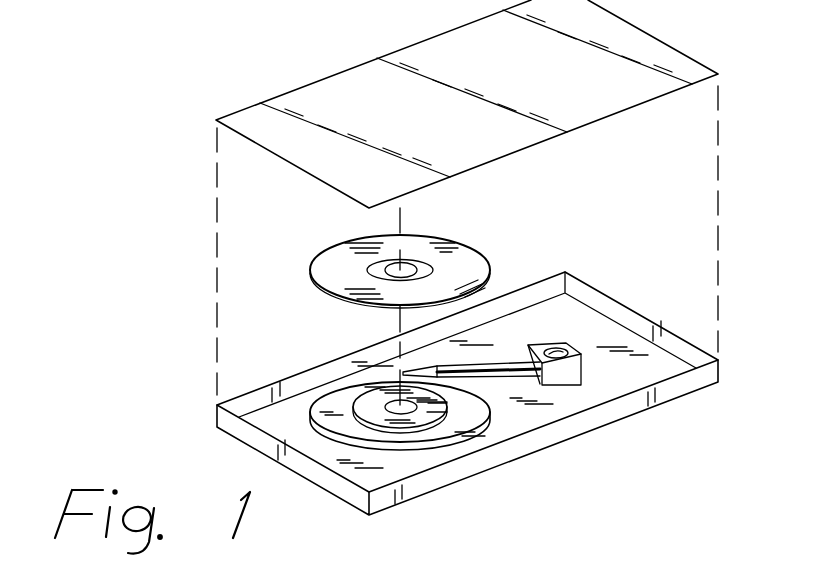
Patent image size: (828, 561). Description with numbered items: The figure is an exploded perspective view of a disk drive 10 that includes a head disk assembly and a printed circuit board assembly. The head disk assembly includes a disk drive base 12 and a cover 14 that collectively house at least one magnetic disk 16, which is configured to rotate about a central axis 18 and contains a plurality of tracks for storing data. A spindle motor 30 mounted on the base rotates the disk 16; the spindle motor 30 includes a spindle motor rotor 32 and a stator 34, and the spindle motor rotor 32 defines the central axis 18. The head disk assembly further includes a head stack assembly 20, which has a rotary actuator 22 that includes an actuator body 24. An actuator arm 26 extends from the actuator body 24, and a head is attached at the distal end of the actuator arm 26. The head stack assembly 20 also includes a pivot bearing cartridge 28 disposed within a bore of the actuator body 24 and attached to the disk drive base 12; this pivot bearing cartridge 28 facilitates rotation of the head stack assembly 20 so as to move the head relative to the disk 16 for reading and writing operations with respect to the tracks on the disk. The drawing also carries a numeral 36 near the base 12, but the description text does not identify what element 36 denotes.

The disk drive 10 is at (153, 142).
The disk drive base 12 is at (600, 420).
The cover 14 is at (300, 100).
The magnetic disk 16 is at (330, 257).
The central axis 18 is at (396, 322).
The head stack assembly 20 is at (575, 319).
The rotary actuator 22 is at (557, 347).
The actuator body 24 is at (581, 362).
The actuator arm 26 is at (503, 358).
The pivot bearing cartridge 28 is at (568, 345).
The spindle motor 30 is at (442, 463).
The spindle motor rotor 32 is at (443, 424).
The stator 34 is at (388, 440).
The base plate portion 36 is at (310, 411).